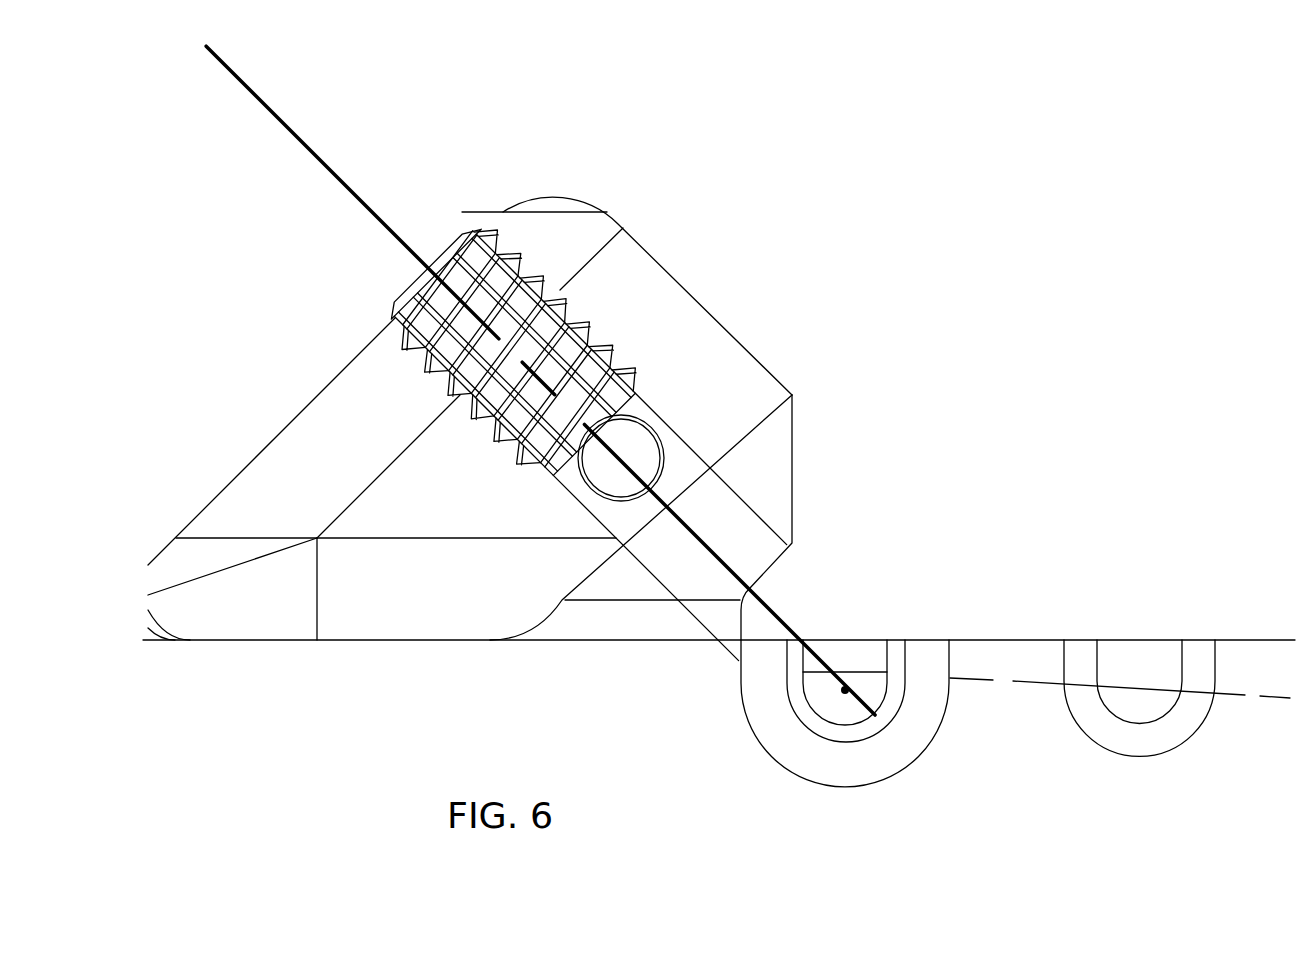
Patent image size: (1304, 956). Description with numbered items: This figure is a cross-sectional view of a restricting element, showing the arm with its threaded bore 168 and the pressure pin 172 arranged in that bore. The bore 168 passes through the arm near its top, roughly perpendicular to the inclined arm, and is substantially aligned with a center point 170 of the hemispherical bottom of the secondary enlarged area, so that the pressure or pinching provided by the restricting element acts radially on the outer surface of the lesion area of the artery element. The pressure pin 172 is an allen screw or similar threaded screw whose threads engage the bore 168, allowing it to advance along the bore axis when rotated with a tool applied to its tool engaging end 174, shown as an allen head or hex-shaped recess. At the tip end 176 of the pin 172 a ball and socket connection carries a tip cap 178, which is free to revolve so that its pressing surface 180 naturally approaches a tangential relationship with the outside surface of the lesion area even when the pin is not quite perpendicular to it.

The threaded bore 168 is at (640, 390).
The center point 170 is at (845, 690).
The pressure pin 172 is at (428, 288).
The tool engaging end 174 is at (466, 262).
The tip end 176 is at (700, 483).
The tip cap 178 is at (638, 528).
The pressing surface 180 is at (650, 537).